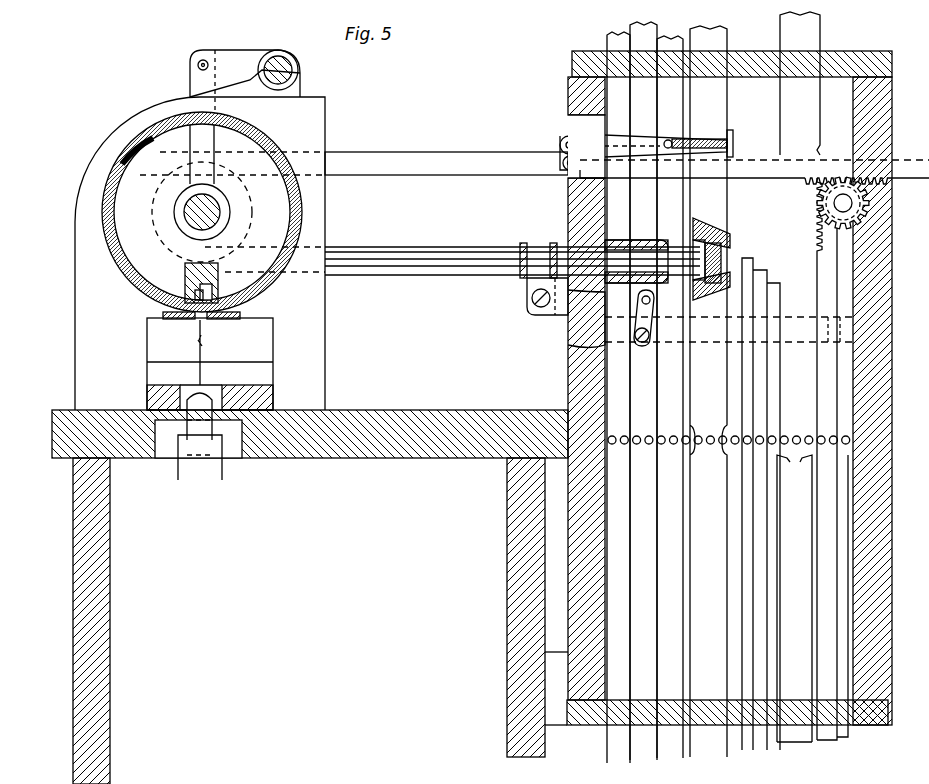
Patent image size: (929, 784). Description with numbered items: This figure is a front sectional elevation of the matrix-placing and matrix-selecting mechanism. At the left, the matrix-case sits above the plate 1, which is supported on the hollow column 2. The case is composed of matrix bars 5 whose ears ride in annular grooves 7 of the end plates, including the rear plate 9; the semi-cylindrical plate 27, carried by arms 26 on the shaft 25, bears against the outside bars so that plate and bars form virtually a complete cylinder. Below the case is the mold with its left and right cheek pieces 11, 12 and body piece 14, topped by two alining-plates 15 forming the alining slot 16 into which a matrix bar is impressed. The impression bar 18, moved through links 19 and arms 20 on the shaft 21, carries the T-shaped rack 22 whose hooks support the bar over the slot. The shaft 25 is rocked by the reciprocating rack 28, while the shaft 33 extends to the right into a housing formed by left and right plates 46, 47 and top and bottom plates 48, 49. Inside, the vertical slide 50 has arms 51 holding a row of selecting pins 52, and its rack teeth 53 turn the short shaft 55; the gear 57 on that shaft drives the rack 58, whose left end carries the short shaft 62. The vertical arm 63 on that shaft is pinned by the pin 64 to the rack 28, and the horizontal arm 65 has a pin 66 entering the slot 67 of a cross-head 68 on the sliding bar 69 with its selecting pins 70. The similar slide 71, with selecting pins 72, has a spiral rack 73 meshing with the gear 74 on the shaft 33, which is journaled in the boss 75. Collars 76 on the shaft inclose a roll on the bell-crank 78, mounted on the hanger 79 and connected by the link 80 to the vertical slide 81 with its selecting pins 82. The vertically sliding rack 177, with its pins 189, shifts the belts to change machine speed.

The plate 1 is at (440, 440).
The column 2 is at (507, 532).
The matrix bars 5 is at (108, 196).
The annular grooves 7 is at (135, 150).
The rear plate 9 is at (200, 253).
The left cheek piece 11 is at (210, 364).
The right cheek piece 12 is at (210, 387).
The body piece 14 is at (201, 348).
The alining-plates 15 is at (172, 322).
The alining slot 16 is at (203, 320).
The impression bar 18 is at (201, 272).
The links 19 is at (190, 72).
The arms 20 is at (222, 66).
The shaft 21 is at (276, 58).
The T-shaped rack 22 is at (218, 278).
The shaft 25 is at (225, 215).
The arms 26 is at (214, 152).
The semi-cylindrical plate 27 is at (246, 137).
The reciprocating rack 28 is at (446, 163).
The shaft 33 is at (512, 261).
The left plate 46 is at (572, 378).
The right plate 47 is at (892, 360).
The top plate 48 is at (890, 62).
The bottom plate 49 is at (858, 728).
The vertical slide 50 is at (814, 376).
The arms 51 is at (760, 452).
The selecting pins 52 is at (811, 428).
The rack teeth 53 is at (828, 230).
The short shaft 55 is at (852, 203).
The gear 57 is at (860, 218).
The rack 58 is at (754, 172).
The short shaft 62 is at (565, 138).
The vertical arm 63 is at (560, 142).
The pin 64 is at (563, 168).
The horizontal arm 65 is at (653, 146).
The pin 66 is at (672, 142).
The slot 67 is at (728, 148).
The cross-head 68 is at (730, 137).
The vertically sliding bar 69 is at (670, 397).
The selecting pins 70 is at (661, 447).
The slide 71 is at (708, 391).
The selecting pins 72 is at (698, 447).
The spiral rack 73 is at (712, 232).
The gear 74 is at (722, 255).
The boss 75 is at (630, 238).
The collars 76 is at (553, 245).
The bell-crank 78 is at (527, 283).
The hanger 79 is at (572, 318).
The link 80 is at (652, 325).
The vertical slide 81 is at (643, 391).
The selecting pins 82 is at (637, 447).
The vertically sliding rack 177 is at (622, 397).
The pins 189 is at (612, 447).